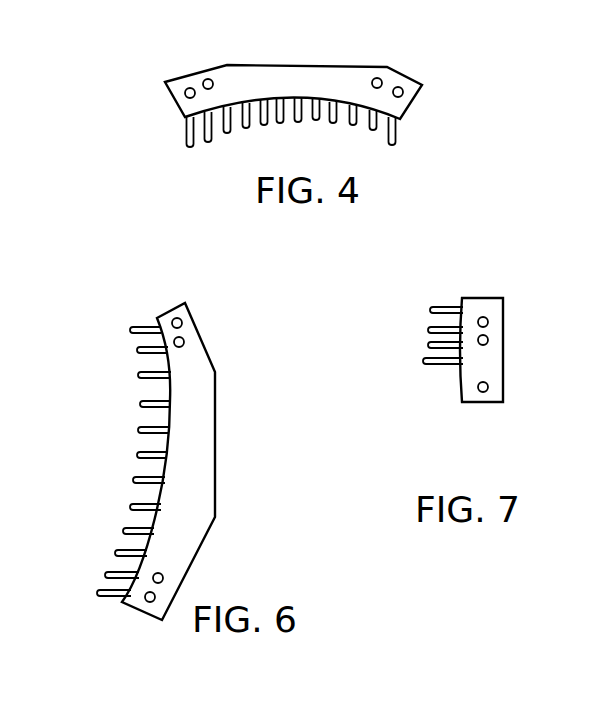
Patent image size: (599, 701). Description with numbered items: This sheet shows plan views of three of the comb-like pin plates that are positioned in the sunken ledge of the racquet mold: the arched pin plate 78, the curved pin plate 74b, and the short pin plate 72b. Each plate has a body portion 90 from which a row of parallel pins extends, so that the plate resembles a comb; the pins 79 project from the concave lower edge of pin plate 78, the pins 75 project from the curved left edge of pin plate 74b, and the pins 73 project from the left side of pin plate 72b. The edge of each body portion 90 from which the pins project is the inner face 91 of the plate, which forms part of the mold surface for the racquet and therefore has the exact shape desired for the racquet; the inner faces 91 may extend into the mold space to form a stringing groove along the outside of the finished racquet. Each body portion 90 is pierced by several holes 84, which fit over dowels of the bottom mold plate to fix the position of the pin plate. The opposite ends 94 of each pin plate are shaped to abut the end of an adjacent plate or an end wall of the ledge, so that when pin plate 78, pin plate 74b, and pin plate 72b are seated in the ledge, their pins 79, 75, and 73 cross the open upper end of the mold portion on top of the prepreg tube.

In FIG. 4, the pin plate 78 is at (291, 98).
In FIG. 4, the pins 79 is at (398, 140).
In FIG. 4, the holes 84 is at (190, 88).
In FIG. 4, the body portion 90 is at (328, 72).
In FIG. 6, the body portion 90 is at (212, 378).
In FIG. 7, the body portion 90 is at (505, 342).
In FIG. 4, the inner face 91 is at (328, 139).
In FIG. 6, the inner face 91 is at (118, 454).
In FIG. 7, the inner face 91 is at (407, 363).
In FIG. 4, the opposite ends 94 is at (166, 91).
In FIG. 6, the opposite ends 94 is at (170, 312).
In FIG. 7, the opposite ends 94 is at (478, 298).
In FIG. 6, the pin plate 74b is at (175, 465).
In FIG. 6, the pins 75 is at (160, 340).
In FIG. 7, the pin plate 72b is at (467, 353).
In FIG. 7, the pins 73 is at (433, 366).